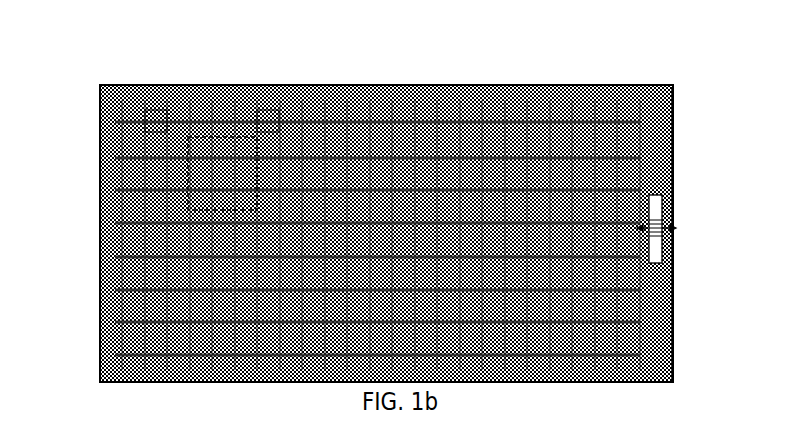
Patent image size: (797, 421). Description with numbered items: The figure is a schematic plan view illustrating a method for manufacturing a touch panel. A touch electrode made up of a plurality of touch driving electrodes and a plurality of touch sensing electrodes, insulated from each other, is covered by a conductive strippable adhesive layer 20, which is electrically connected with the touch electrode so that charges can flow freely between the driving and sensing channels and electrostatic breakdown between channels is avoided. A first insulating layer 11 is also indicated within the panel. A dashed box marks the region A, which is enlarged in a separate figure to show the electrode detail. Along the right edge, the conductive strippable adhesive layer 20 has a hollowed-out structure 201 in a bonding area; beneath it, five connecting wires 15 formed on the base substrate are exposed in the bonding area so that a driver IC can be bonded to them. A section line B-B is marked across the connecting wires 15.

The conductive strippable adhesive layer 20 is at (655, 88).
The hollowed-out structure 201 is at (675, 136).
The first insulating layer 11 is at (433, 110).
The connecting wire 15 is at (675, 198).
The region A is at (125, 152).
The section line B- B is at (655, 244).